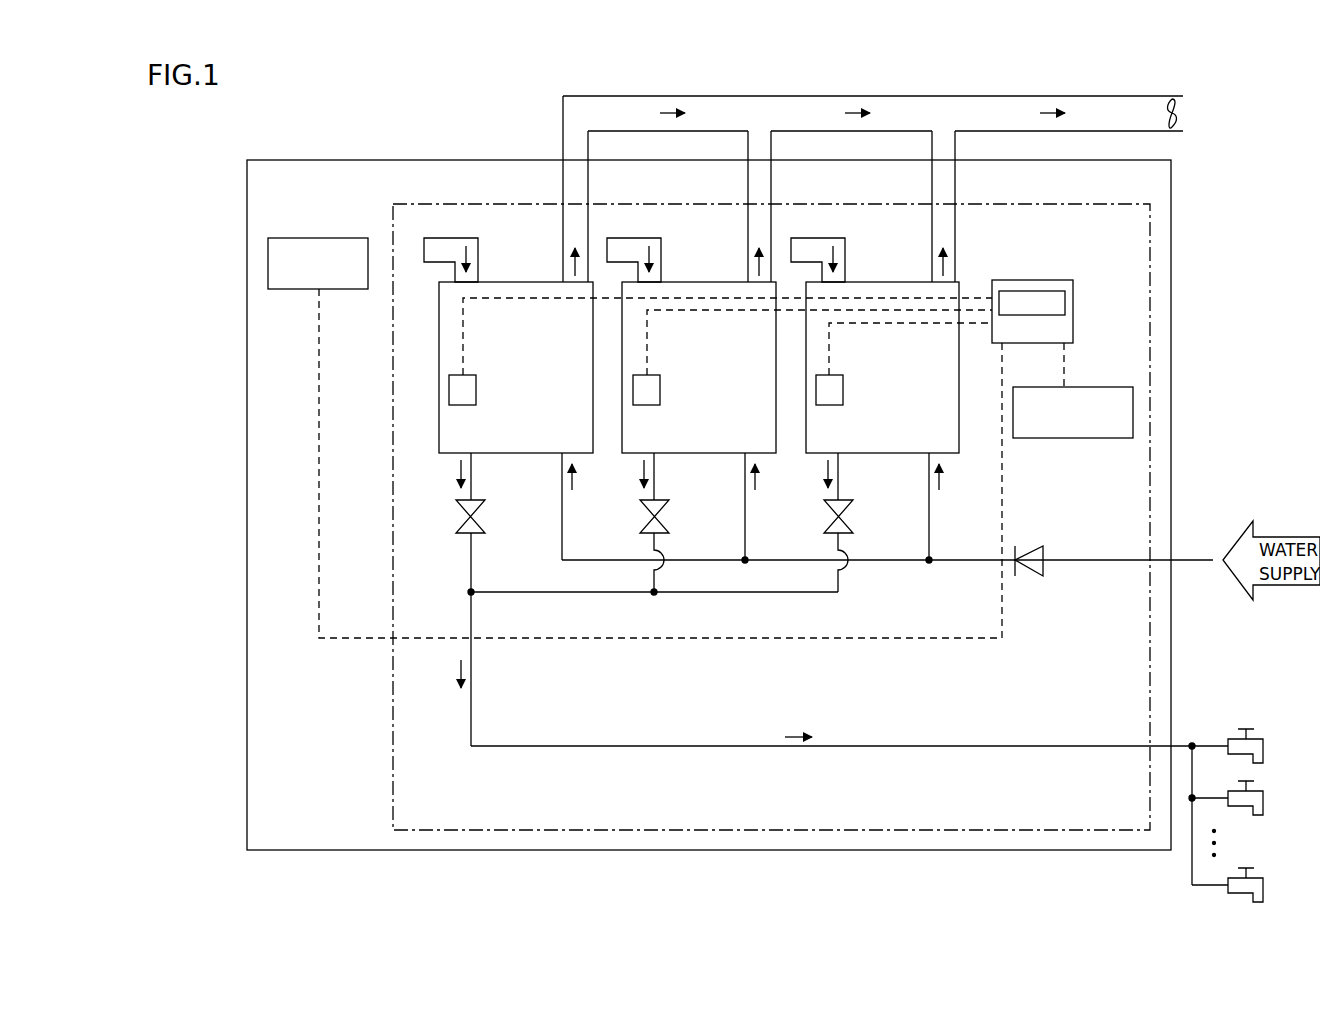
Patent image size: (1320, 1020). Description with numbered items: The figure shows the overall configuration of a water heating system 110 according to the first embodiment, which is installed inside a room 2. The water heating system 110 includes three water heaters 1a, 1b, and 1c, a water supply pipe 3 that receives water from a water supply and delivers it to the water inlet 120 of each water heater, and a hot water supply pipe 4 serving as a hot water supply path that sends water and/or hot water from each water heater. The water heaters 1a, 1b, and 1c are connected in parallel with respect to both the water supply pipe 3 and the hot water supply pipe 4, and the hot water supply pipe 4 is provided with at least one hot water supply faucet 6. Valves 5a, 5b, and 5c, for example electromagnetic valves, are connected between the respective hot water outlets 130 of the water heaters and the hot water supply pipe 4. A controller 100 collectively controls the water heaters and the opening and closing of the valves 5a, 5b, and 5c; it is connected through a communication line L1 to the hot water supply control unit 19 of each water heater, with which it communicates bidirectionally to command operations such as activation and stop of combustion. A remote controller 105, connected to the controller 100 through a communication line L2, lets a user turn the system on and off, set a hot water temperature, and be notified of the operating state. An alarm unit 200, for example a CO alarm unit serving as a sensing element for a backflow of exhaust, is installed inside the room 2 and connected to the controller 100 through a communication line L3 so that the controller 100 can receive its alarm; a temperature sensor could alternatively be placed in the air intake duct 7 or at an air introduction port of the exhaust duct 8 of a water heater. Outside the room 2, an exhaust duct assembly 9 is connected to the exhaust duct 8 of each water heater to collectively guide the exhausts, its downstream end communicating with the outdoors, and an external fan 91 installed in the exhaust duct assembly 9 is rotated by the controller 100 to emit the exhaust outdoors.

The room 2 is at (1172, 213).
The water heating system 110 is at (1080, 204).
The alarm unit 200 is at (318, 238).
The communication line L3 is at (320, 333).
The water heater 1a is at (487, 278).
The water heater 1b is at (670, 278).
The water heater 1c is at (854, 278).
The air intake duct 7 is at (450, 238).
The exhaust duct 8 is at (563, 266).
The exhaust duct assembly 9 is at (845, 96).
The external fan 91 is at (1178, 118).
The controller 100 is at (1030, 280).
The communication line L1 is at (968, 334).
The communication line L2 is at (1067, 367).
The remote controller 105 is at (1085, 438).
The hot water supply control unit 19 is at (476, 390).
The hot water outlet 130 is at (473, 455).
The water inlet 120 is at (560, 455).
The valve 5a is at (464, 536).
The valve 5b is at (648, 536).
The valve 5c is at (832, 536).
The water supply pipe 3 is at (888, 565).
The hot water supply pipe 4 is at (631, 744).
The hot water supply faucet 6 is at (1264, 750).